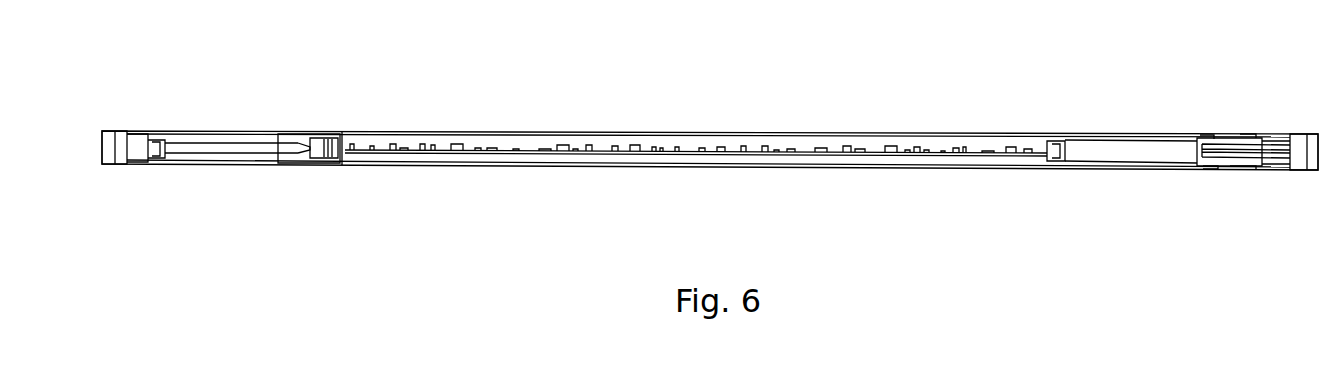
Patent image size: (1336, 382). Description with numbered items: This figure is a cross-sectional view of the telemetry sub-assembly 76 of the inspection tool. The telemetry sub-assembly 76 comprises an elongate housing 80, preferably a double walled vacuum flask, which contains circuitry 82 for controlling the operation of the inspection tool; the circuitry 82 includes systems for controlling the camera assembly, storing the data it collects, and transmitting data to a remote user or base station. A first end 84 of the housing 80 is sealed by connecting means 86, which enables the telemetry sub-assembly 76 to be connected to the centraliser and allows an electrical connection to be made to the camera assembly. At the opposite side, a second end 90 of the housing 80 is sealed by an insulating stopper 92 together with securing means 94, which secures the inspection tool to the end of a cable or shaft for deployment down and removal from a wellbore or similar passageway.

The telemetry sub-assembly 76 is at (838, 70).
The elongate housing 80 is at (706, 131).
The circuitry 82 is at (584, 146).
The first end 84 is at (108, 168).
The connecting means 86 is at (137, 140).
The second end 90 is at (1315, 173).
The insulating stopper 92 is at (1118, 152).
The securing means 94 is at (1297, 142).